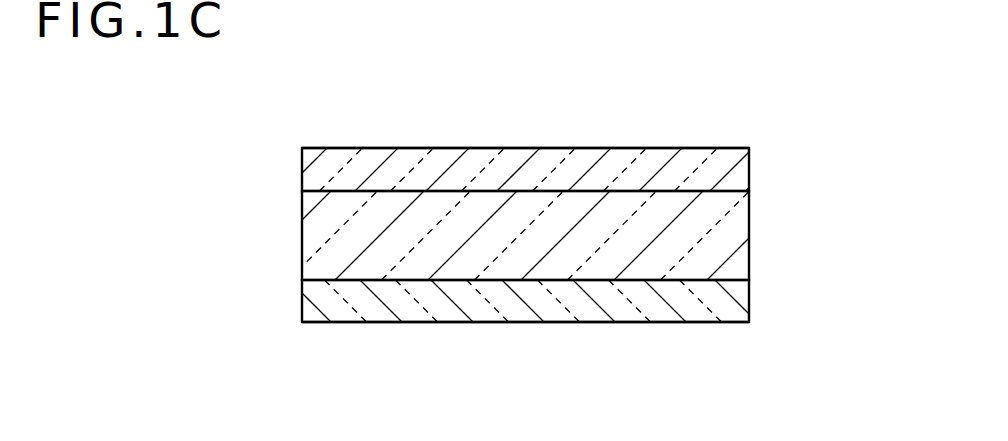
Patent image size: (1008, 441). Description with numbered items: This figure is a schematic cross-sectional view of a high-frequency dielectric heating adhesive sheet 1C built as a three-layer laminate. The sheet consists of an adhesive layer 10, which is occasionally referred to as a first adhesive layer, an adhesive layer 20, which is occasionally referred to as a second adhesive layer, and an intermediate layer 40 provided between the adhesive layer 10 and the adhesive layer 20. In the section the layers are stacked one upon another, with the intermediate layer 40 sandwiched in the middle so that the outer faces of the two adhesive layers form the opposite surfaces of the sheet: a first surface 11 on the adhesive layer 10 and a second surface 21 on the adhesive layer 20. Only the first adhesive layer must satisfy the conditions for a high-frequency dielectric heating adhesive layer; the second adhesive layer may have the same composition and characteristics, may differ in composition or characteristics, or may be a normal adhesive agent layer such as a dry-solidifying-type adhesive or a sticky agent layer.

The high-frequency dielectric heating adhesive sheet 1C is at (780, 101).
The adhesive layer 10 is at (718, 171).
The first surface 11 is at (385, 148).
The intermediate layer 40 is at (718, 231).
The adhesive layer 20 is at (718, 300).
The second surface 21 is at (401, 322).